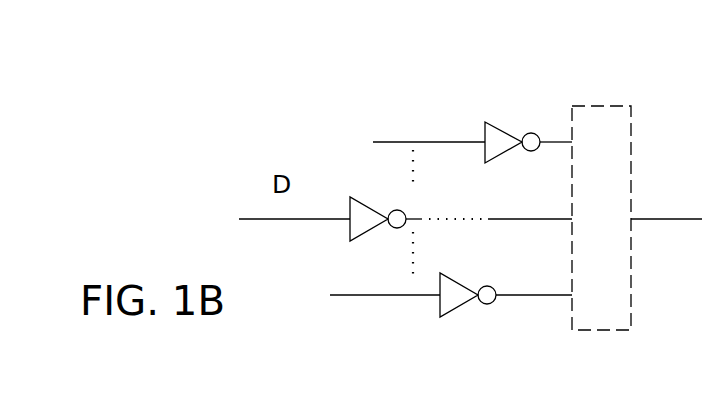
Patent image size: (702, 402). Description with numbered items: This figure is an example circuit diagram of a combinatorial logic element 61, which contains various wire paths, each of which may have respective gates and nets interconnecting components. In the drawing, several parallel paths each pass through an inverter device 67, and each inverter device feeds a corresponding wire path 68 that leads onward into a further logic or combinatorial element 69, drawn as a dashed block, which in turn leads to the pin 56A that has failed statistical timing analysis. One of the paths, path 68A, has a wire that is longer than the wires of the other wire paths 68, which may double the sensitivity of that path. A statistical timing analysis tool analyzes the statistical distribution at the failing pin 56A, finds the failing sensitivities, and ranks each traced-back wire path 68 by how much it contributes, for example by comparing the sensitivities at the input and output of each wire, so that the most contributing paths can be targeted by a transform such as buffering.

The combinatorial logic element 61 is at (388, 118).
The inverter device 67 is at (506, 126).
The wire path 68 is at (561, 140).
The path with longer wire 68A is at (551, 217).
The logic or combinatorial element 69 is at (600, 105).
The failing pin 56A is at (653, 217).